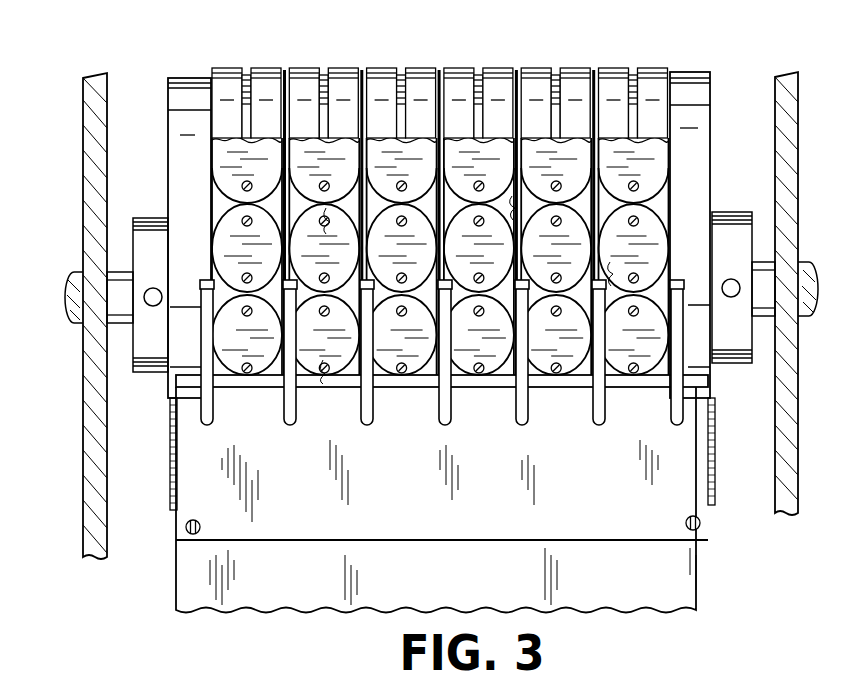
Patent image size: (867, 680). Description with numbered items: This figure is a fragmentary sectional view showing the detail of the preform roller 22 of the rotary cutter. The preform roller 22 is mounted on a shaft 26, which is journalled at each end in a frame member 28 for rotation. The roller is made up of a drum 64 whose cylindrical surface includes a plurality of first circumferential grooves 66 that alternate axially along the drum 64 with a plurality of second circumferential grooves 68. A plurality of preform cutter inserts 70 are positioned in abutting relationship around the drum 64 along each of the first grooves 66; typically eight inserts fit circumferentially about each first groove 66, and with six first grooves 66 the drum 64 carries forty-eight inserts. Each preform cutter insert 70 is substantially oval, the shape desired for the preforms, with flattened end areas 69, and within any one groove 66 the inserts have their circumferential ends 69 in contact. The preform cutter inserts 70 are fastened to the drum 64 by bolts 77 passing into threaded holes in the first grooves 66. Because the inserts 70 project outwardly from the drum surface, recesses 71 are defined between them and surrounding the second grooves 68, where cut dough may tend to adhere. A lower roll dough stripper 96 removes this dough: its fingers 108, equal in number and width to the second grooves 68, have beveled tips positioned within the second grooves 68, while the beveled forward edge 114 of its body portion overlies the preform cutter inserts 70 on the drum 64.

The preform roller 22 is at (193, 122).
The shaft 26 is at (120, 305).
The frame member 28 is at (104, 408).
The drum 64 is at (660, 88).
The first circumferential grooves 66 is at (246, 66).
The second circumferential grooves 68 is at (286, 71).
The flattened end areas 69 is at (278, 189).
The preform cutter inserts 70 is at (266, 172).
The recesses 71 is at (305, 372).
The bolts 77 is at (256, 224).
The lower roll dough stripper 96 is at (688, 455).
The fingers 108 is at (287, 338).
The forward edge 114 is at (253, 390).